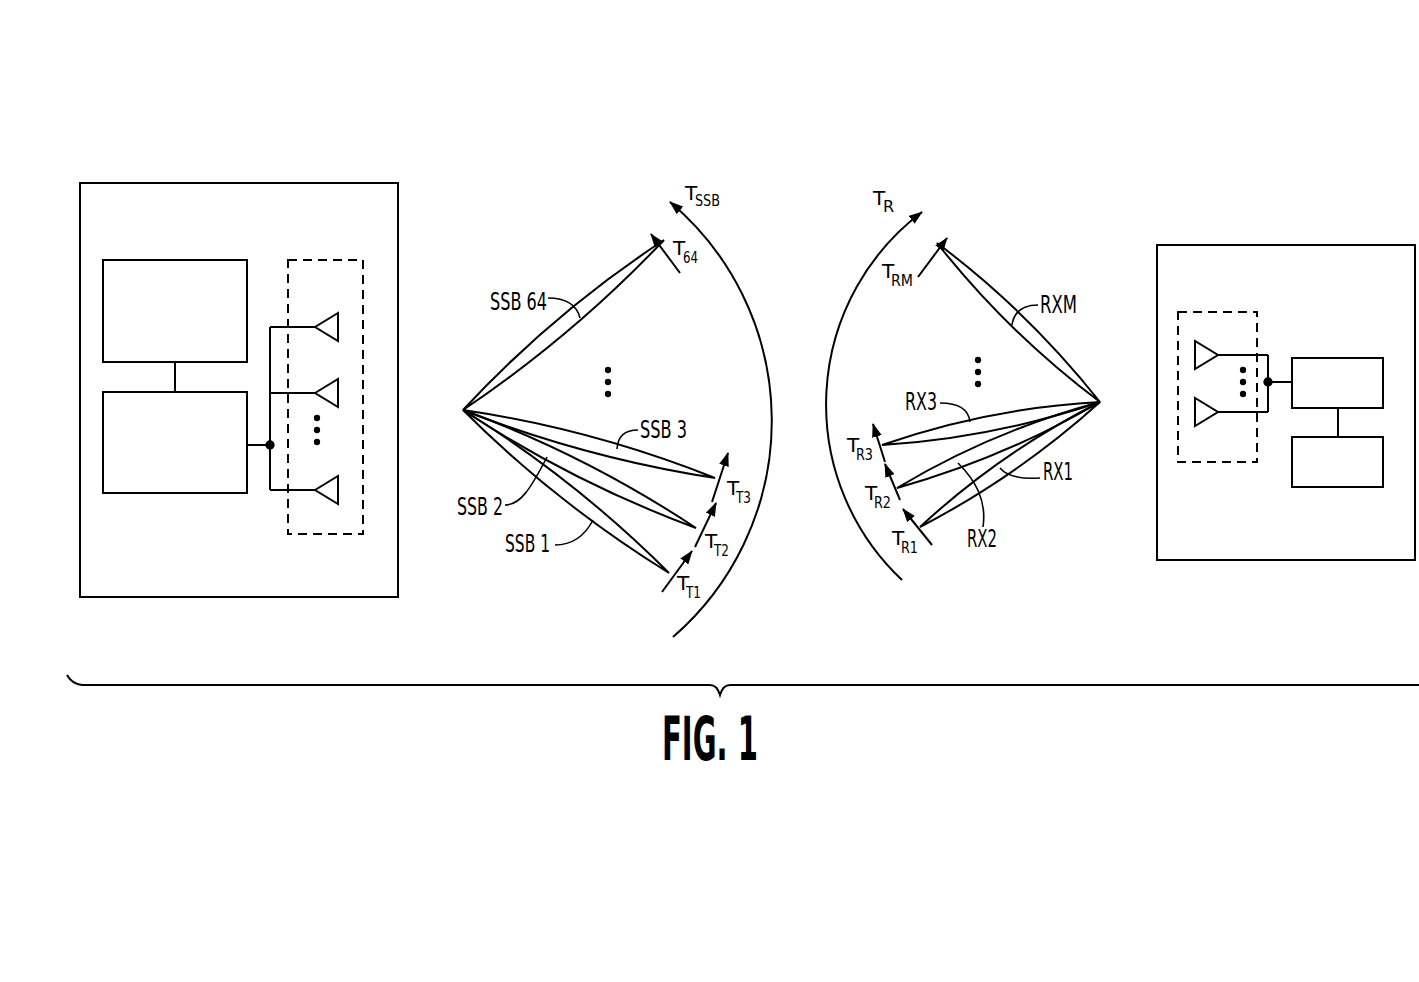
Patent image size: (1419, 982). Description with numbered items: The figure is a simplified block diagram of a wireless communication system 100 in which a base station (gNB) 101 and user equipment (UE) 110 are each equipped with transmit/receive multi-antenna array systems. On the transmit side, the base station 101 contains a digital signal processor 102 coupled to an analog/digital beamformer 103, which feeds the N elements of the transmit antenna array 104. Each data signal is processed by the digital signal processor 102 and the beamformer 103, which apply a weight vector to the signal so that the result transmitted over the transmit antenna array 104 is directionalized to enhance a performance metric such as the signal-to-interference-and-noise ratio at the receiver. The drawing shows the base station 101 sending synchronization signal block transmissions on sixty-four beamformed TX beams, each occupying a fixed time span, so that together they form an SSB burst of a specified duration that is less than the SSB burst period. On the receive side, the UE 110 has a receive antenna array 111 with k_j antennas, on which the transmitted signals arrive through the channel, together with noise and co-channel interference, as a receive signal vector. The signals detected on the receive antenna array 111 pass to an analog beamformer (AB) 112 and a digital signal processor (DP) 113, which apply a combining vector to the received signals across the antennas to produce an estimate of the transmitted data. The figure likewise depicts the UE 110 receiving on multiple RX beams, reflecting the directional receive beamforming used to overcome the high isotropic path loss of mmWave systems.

The wireless communication system 100 is at (1284, 134).
The base station (gNB) 101 is at (353, 580).
The digital signal processor 102 is at (193, 352).
The analog/digital beamformer 103 is at (193, 481).
The transmit antenna array 104 is at (327, 255).
The user equipment (UE) 110 is at (1320, 543).
The receive antenna array 111 is at (1226, 309).
The analog beamformer (AB) 112 is at (1368, 395).
The digital signal processor (DP) 113 is at (1368, 473).